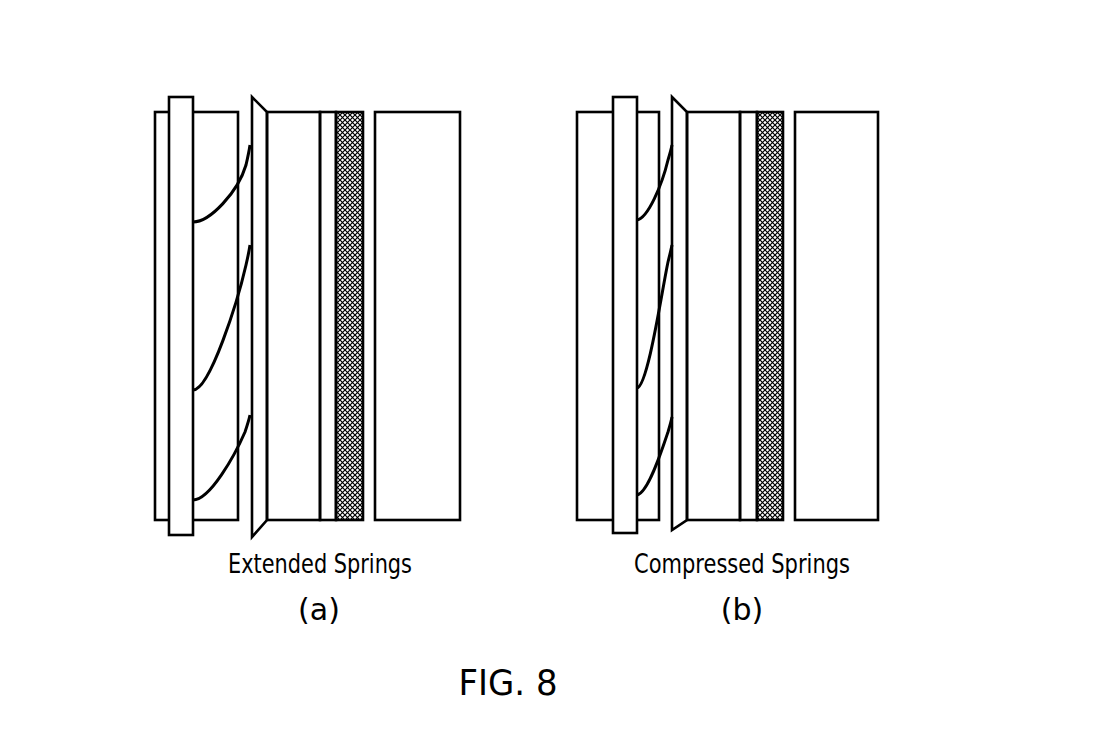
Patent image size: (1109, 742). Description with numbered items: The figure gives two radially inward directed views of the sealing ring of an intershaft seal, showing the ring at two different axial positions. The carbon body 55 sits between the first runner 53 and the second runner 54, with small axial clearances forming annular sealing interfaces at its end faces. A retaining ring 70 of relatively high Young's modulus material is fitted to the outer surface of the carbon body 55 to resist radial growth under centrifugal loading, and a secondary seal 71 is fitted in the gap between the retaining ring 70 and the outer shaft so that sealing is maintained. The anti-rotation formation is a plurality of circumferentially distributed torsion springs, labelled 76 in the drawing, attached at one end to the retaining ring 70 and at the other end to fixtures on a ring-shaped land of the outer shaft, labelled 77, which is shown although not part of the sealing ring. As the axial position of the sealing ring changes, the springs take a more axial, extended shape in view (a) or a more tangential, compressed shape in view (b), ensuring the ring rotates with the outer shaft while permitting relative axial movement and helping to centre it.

The first runner 53 is at (160, 113).
The second runner 54 is at (418, 140).
The carbon body 55 is at (352, 118).
The retaining ring 70 is at (286, 118).
The secondary seal 71 is at (328, 120).
The springs 76 is at (200, 468).
The bar 77 is at (183, 97).